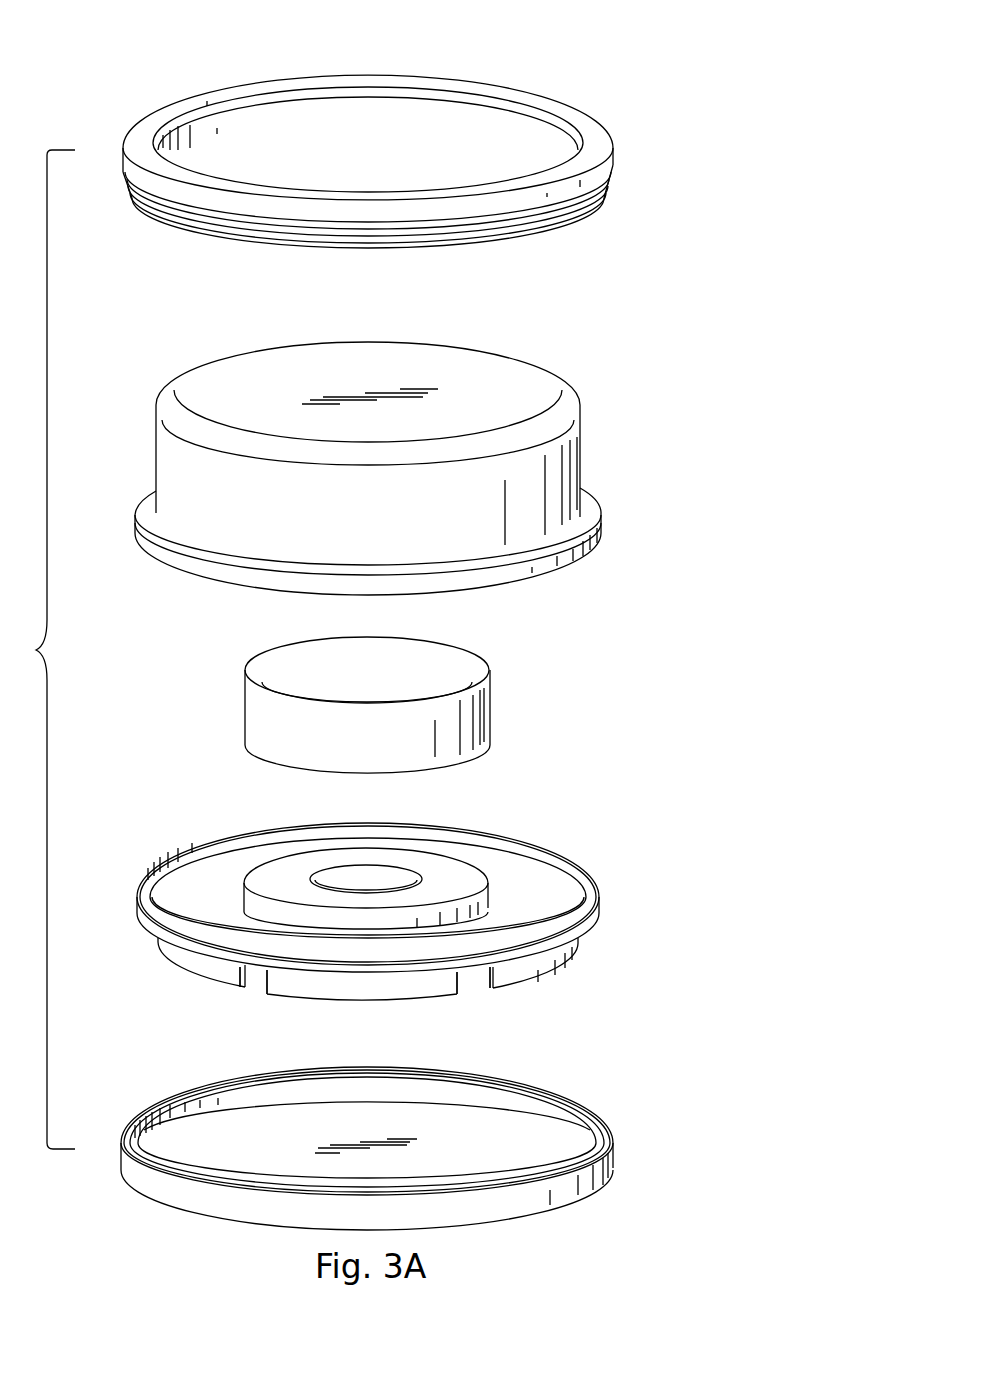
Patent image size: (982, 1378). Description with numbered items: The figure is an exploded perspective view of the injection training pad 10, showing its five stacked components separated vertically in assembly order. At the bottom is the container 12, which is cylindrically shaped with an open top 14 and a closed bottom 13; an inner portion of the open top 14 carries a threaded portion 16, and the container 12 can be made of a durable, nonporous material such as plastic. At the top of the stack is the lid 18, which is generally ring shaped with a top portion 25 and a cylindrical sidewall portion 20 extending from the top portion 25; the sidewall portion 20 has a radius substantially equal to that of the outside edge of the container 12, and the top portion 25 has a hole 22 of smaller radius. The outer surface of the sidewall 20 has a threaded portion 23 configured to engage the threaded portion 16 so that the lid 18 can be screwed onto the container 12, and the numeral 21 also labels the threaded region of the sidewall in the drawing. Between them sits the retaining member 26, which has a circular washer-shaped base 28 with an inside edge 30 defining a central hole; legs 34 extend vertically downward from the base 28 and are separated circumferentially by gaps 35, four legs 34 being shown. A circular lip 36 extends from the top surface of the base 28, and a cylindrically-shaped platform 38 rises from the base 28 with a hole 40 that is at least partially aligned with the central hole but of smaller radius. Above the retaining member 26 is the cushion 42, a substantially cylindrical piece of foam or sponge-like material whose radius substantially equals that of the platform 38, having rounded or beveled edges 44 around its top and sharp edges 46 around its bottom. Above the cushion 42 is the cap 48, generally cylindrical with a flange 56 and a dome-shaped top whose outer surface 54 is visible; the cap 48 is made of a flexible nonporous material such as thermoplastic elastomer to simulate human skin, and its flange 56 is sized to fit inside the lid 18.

The injection training pad 10 is at (131, 73).
The container 12 is at (617, 1150).
The closed bottom 13 is at (484, 1224).
The open top 14 is at (381, 1162).
The threaded portion 16 is at (568, 1102).
The lid 18 is at (367, 155).
The sidewall portion 20 is at (367, 212).
The lower thread 21 is at (127, 200).
The hole 22 is at (403, 103).
The threaded portion 23 is at (125, 178).
The top portion 25 is at (582, 115).
The retaining member 26 is at (376, 915).
The base 28 is at (138, 912).
The inside edge 30 is at (363, 468).
The legs 34 is at (177, 962).
The gaps 35 is at (257, 987).
The circular lip 36 is at (595, 888).
The cylindrically-shaped platform 38 is at (248, 895).
The hole 40 is at (392, 878).
The cushion 42 is at (369, 705).
The rounded or beveled edges 44 is at (260, 688).
The sharp edges 46 is at (245, 745).
The cap 48 is at (572, 392).
The outer surface 54 is at (581, 445).
The flange 56 is at (135, 527).